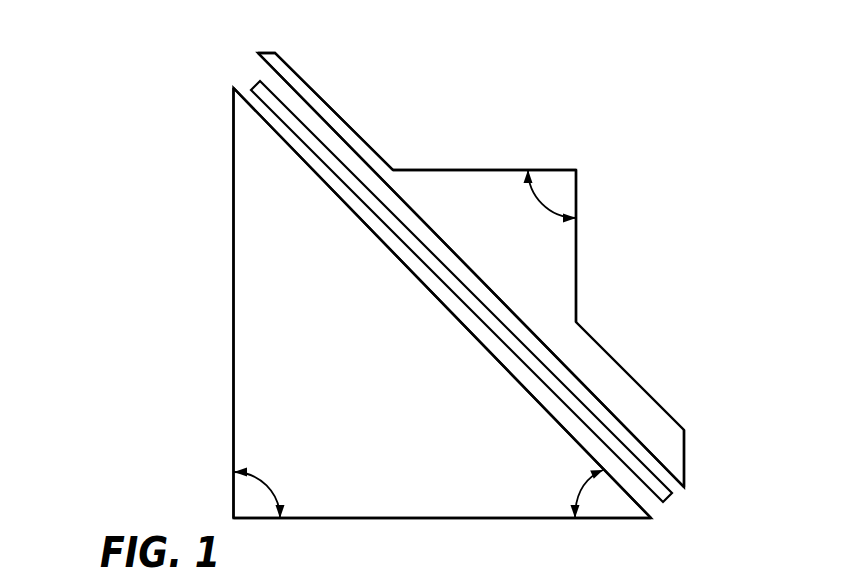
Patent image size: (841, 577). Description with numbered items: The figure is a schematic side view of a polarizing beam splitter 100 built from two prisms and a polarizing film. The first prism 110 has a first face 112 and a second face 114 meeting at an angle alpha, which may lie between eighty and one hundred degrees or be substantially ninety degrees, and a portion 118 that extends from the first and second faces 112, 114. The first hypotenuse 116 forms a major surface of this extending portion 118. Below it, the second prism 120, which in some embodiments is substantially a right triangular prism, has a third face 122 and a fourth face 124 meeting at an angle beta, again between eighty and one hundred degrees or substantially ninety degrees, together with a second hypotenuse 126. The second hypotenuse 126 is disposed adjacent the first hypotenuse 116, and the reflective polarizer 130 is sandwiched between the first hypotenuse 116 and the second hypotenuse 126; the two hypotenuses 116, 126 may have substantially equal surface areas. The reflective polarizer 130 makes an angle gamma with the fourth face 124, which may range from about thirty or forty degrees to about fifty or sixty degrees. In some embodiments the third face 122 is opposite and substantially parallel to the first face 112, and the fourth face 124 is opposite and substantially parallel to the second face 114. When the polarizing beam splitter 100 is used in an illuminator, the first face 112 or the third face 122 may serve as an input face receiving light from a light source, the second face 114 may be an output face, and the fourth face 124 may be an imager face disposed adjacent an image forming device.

The polarizing beam splitter 100 is at (96, 126).
The first prism 110 is at (450, 193).
The first face 112 is at (577, 255).
The second face 114 is at (497, 171).
The first hypotenuse 116 is at (617, 420).
The portion 118 is at (302, 77).
The second prism 120 is at (315, 358).
The third face 122 is at (233, 272).
The fourth face 124 is at (365, 519).
The second hypotenuse 126 is at (500, 372).
The reflective polarizer 130 is at (257, 88).